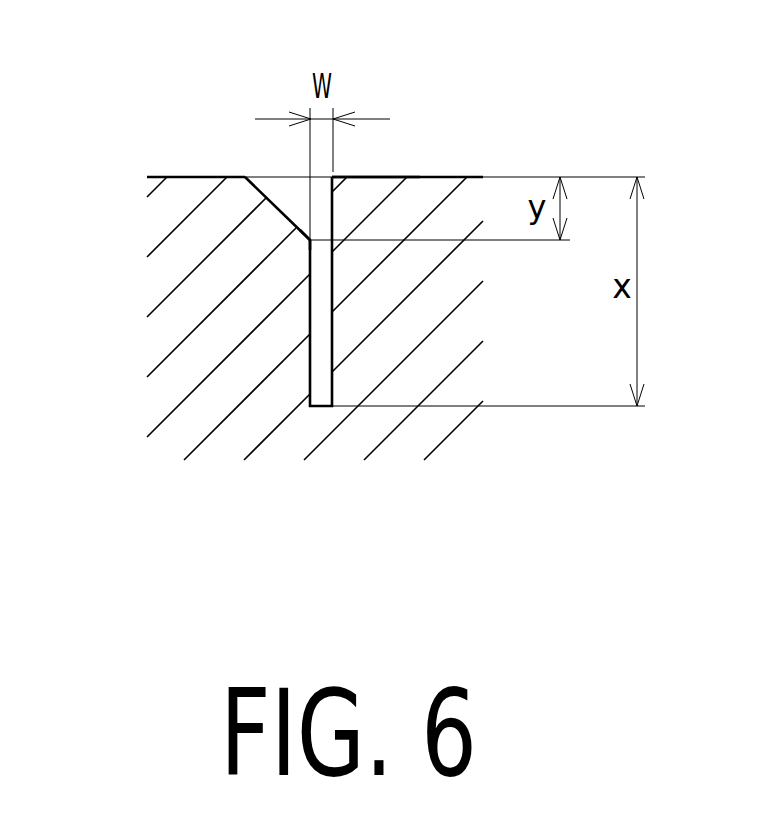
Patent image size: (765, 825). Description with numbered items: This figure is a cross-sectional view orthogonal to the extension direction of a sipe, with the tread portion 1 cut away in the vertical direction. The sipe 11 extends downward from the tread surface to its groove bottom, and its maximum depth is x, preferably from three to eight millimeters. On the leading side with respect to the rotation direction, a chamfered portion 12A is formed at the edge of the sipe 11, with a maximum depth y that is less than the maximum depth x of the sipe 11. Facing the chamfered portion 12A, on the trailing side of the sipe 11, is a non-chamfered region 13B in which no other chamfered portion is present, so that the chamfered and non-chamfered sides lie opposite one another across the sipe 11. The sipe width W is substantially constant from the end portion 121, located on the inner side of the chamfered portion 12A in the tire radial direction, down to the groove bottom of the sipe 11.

The tread portion 1 is at (458, 176).
The sipe 11 is at (322, 407).
The chamfered portion 12A is at (262, 196).
The non-chamfered region 13B is at (362, 176).
The end portion 121 is at (310, 240).